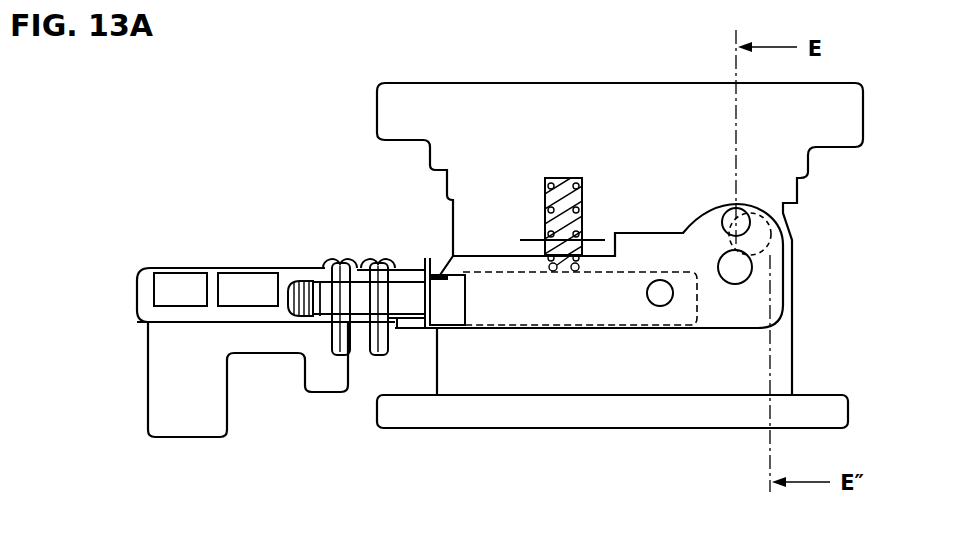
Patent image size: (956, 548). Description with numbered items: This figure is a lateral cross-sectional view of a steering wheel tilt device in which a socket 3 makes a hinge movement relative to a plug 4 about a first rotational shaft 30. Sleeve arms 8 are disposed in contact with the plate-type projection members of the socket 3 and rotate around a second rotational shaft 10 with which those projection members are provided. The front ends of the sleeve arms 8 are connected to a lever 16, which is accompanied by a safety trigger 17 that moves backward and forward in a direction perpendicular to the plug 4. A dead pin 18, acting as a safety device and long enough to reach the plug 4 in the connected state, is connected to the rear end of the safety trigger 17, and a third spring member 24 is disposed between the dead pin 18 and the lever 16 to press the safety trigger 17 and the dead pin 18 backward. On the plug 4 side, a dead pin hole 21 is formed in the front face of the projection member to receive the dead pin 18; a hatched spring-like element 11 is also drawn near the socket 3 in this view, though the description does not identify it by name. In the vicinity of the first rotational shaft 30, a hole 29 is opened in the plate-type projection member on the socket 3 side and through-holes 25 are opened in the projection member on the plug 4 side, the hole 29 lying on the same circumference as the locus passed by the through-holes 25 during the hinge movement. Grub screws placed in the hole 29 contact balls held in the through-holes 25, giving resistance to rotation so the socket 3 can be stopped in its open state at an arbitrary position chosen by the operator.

The socket 3 is at (850, 110).
The plug 4 is at (848, 412).
The sleeve arm 8 is at (562, 302).
The second rotational shaft 10 is at (660, 293).
The spring 11 is at (548, 180).
The lever 16 is at (147, 290).
The safety trigger 17 is at (190, 415).
The dead pin 18 is at (408, 300).
The dead pin hole 21 is at (468, 302).
The third spring member 24 is at (298, 278).
The through-hole 25 is at (783, 238).
The hole 29 is at (720, 211).
The first rotational shaft 30 is at (733, 267).